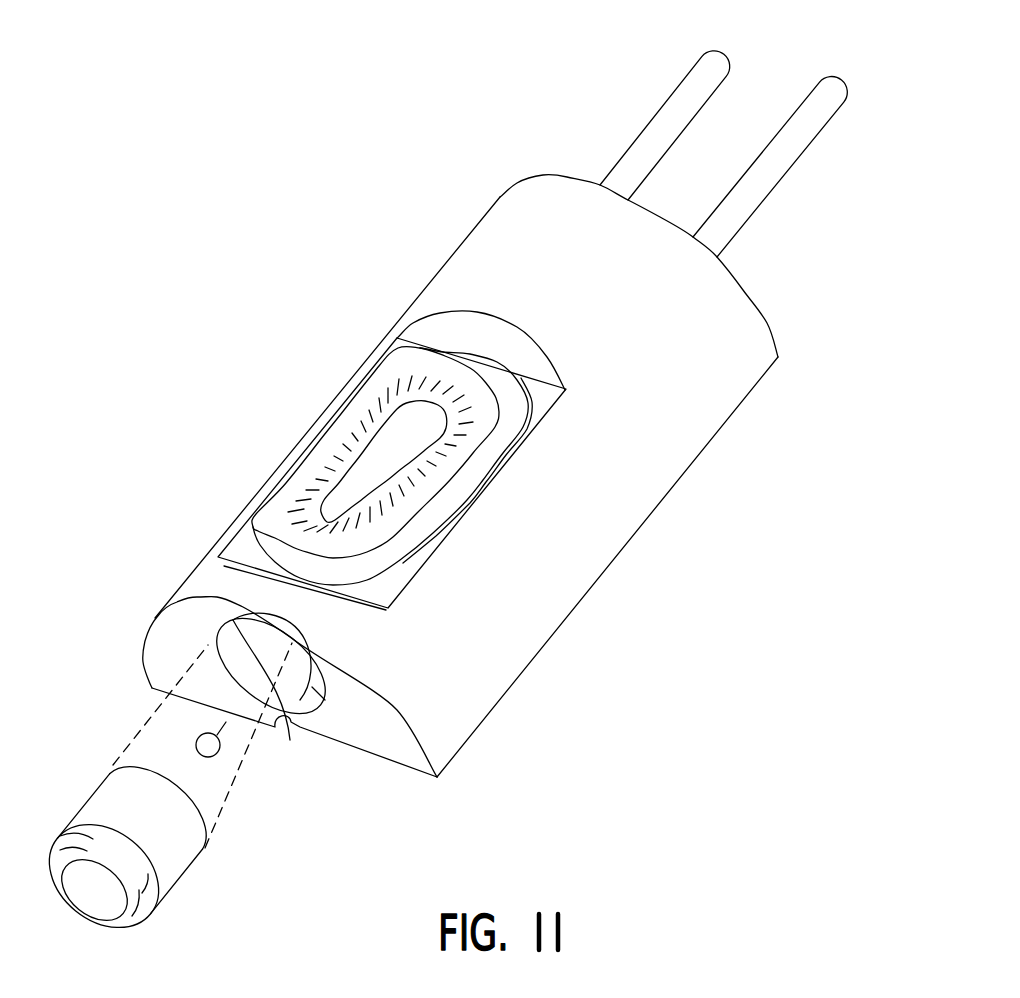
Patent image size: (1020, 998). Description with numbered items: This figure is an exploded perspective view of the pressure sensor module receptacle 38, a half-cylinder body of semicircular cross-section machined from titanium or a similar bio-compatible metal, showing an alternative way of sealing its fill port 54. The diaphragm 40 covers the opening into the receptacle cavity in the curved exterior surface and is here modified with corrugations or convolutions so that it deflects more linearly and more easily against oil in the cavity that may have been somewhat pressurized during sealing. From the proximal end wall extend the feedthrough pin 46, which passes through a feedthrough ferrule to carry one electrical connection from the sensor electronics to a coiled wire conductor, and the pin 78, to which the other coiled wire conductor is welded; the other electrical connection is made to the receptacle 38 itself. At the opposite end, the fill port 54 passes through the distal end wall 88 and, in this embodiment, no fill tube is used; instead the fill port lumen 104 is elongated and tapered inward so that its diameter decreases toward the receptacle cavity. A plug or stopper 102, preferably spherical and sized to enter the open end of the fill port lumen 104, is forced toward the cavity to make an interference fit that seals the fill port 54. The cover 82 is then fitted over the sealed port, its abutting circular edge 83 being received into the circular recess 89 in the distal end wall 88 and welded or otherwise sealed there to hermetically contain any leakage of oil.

The receptacle 38 is at (733, 362).
The diaphragm 40 is at (333, 423).
The feedthrough pin 46 is at (773, 185).
The fill port 54 is at (266, 643).
The pin 78 is at (647, 122).
The cover 82 is at (177, 868).
The abutting circular edge 83 is at (113, 767).
The distal end wall 88 is at (400, 742).
The circular recess 89 is at (325, 700).
The plug or stopper 102 is at (196, 735).
The fill port lumen 104 is at (290, 740).